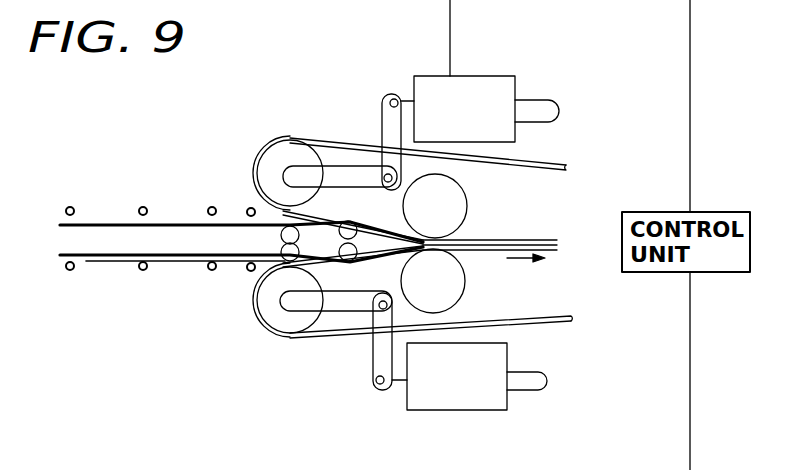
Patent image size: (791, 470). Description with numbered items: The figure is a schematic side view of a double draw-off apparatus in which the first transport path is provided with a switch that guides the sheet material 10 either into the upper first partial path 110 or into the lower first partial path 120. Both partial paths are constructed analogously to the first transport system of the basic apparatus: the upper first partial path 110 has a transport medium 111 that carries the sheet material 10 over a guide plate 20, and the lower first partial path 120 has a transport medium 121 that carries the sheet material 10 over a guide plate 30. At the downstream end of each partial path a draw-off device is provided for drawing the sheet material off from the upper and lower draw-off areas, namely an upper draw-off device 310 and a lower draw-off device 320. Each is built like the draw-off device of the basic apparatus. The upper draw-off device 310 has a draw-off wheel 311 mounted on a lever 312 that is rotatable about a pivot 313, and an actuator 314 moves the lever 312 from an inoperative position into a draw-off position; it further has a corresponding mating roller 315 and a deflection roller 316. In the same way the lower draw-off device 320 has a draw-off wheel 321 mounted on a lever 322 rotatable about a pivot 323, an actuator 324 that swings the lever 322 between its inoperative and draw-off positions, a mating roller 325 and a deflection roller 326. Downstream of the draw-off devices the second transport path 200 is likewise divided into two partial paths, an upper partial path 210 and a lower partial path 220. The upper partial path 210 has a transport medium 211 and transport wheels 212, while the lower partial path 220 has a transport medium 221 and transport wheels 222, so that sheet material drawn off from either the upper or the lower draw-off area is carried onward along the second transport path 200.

The sheet material 10 is at (97, 263).
The guide plate 20 is at (93, 223).
The guide plate 30 is at (165, 258).
The upper first partial path 110 is at (222, 199).
The transport medium 111 is at (141, 209).
The lower first partial path 120 is at (226, 309).
The transport medium 121 is at (141, 268).
The second transport path 200 is at (563, 236).
The partial path 210 is at (456, 192).
The transport medium 211 is at (560, 152).
The transport wheels 212 is at (566, 172).
The partial path 220 is at (582, 290).
The transport medium 221 is at (547, 327).
The transport wheels 222 is at (590, 296).
The draw-off device 310 is at (352, 131).
The draw-off wheel 311 is at (272, 157).
The lever 312 is at (298, 177).
The pivot 313 is at (382, 172).
The actuator 314 is at (470, 87).
The mating roller 315 is at (258, 165).
The deflection roller 316 is at (350, 217).
The draw-off device 320 is at (349, 375).
The draw-off wheel 321 is at (268, 313).
The lever 322 is at (303, 300).
The pivot 323 is at (378, 335).
The actuator 324 is at (488, 413).
The mating roller 325 is at (253, 313).
The deflection roller 326 is at (348, 261).